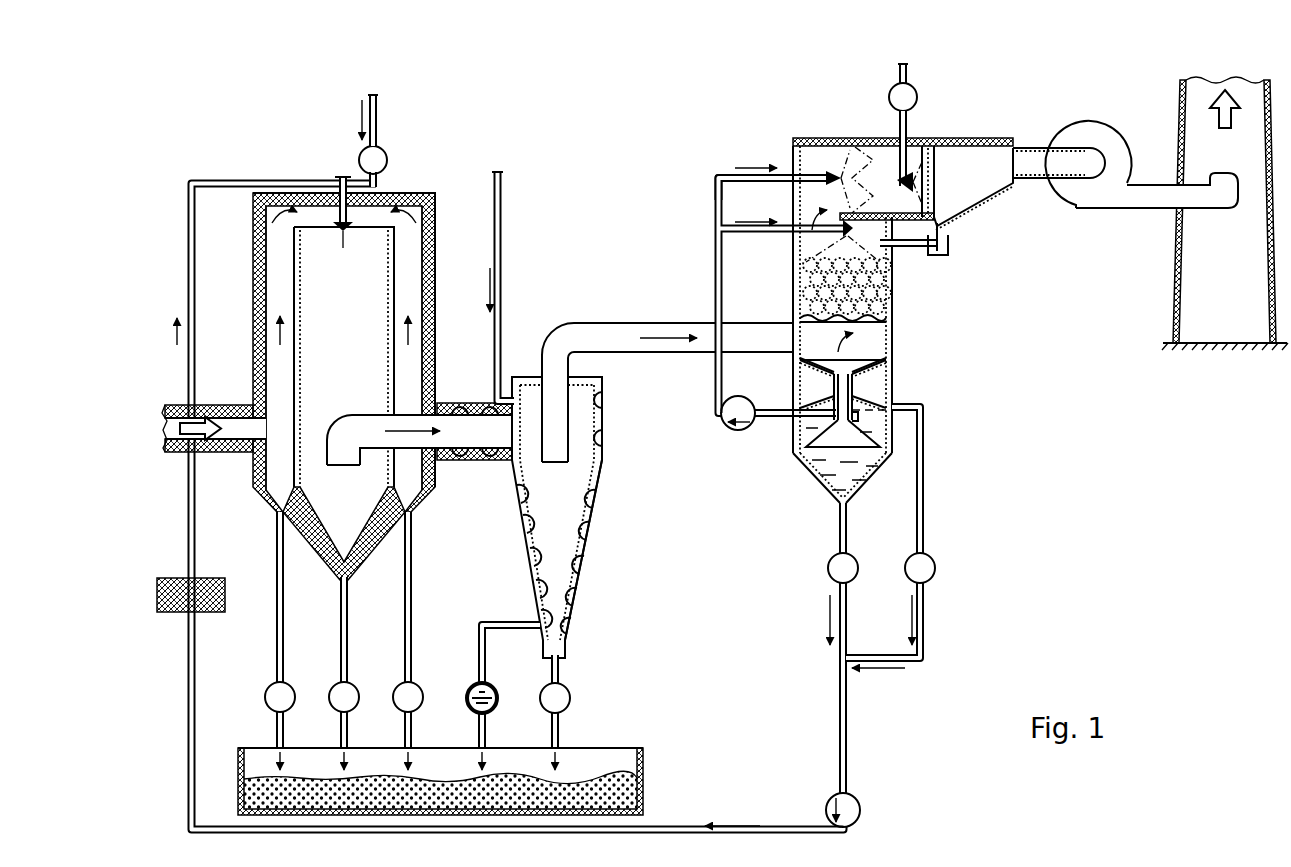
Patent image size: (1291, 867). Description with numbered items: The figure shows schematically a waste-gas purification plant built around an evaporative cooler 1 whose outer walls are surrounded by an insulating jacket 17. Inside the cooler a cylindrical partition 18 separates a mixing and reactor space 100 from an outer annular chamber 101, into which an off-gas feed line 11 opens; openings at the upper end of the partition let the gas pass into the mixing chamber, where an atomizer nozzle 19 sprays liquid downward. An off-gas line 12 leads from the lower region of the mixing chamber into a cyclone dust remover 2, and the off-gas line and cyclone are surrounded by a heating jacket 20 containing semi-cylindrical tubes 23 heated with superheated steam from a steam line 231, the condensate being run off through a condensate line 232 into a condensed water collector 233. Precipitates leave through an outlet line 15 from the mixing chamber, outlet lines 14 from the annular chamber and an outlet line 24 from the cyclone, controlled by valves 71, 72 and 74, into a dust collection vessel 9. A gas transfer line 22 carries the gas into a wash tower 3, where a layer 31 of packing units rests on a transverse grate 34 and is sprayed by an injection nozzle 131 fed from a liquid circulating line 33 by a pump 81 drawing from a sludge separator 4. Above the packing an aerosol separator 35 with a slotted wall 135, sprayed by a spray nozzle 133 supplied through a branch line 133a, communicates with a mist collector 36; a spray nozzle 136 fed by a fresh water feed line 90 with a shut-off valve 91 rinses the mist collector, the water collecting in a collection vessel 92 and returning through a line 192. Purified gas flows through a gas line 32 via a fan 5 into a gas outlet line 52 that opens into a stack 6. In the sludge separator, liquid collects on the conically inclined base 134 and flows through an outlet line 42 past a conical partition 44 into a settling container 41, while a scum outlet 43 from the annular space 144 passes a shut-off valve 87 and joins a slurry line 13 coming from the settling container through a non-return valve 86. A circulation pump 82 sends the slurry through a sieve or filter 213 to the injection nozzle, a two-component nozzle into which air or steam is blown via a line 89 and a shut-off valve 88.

The evaporative cooler 1 is at (438, 182).
The cyclone dust remover 2 is at (613, 428).
The wash tower 3 is at (908, 345).
The sludge separator 4 is at (792, 469).
The fan 5 is at (1112, 138).
The stack 6 is at (1175, 302).
The dust collection vessel 9 is at (645, 766).
The off-gas feed line 11 is at (226, 440).
The off-gas line 12 is at (359, 422).
The slurry line 13 is at (197, 731).
The outlet lines 14 is at (276, 555).
The outlet line 15 is at (347, 612).
The insulating jacket 17 is at (253, 259).
The cylindrical partition 18 is at (386, 356).
The atomizer nozzle 19 is at (345, 234).
The heating jacket 20 is at (606, 453).
The gas transfer line 22 is at (628, 333).
The semi-cylindrical tubes 23 is at (487, 462).
The outlet line 24 is at (560, 672).
The layer of packing units 31 is at (895, 296).
The gas line 32 is at (1028, 156).
The liquid circulating line 33 is at (716, 278).
The transverse grate 34 is at (797, 335).
The aerosol separator 35 is at (863, 136).
The mist collector 36 is at (928, 148).
The settling container 41 is at (886, 440).
The outlet line 42 is at (893, 398).
The scum outlet 43 is at (924, 520).
The conical partition 44 is at (808, 396).
The gas outlet line 52 is at (1139, 203).
The valves 71 is at (266, 694).
The valve 72 is at (332, 689).
The valve 74 is at (571, 700).
The pump 81 is at (729, 430).
The circulation pump 82 is at (828, 800).
The non-return valve 86 is at (829, 567).
The shut-off valve 87 is at (936, 570).
The shut-off valve 88 is at (385, 152).
The line 89 is at (377, 109).
The fresh water feed line 90 is at (898, 73).
The shut-off valve 91 is at (918, 97).
The collection vessel 92 is at (950, 244).
The mixing and reactor space 100 is at (345, 324).
The outer annular chamber 101 is at (277, 289).
The injection nozzle 131 is at (832, 238).
The spray nozzle 133 is at (827, 170).
The branch line 133a is at (734, 172).
The base 134 is at (894, 368).
The slotted wall 135 is at (868, 174).
The spray nozzle 136 is at (912, 189).
The annular space 144 is at (894, 380).
The line 192 is at (915, 250).
The sieve or filter 213 is at (209, 613).
The steam line 231 is at (503, 228).
The condensate line 232 is at (503, 622).
The condensed water collector 233 is at (491, 710).